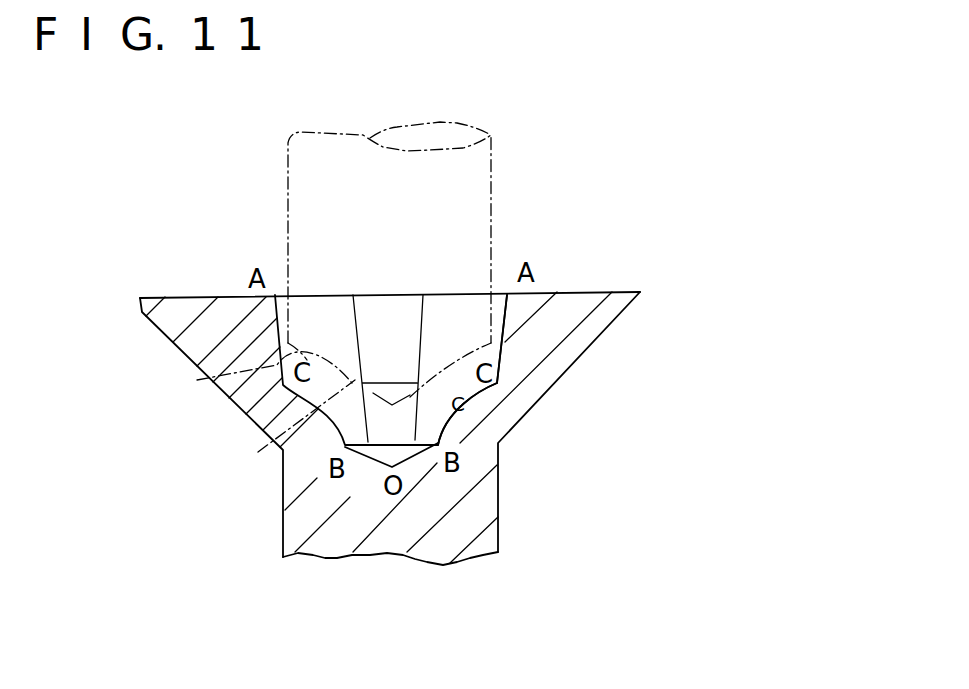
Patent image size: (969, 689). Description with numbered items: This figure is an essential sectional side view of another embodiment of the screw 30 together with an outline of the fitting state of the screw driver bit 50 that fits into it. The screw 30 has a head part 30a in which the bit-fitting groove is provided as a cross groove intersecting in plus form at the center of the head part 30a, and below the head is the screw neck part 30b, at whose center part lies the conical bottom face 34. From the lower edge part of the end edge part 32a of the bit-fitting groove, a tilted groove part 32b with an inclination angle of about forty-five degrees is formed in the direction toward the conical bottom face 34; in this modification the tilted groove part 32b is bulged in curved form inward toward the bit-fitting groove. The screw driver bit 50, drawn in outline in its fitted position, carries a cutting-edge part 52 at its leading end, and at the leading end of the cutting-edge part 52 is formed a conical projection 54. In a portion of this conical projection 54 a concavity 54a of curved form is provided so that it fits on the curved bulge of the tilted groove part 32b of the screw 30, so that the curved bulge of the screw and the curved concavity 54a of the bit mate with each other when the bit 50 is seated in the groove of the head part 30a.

The screw 30 is at (163, 297).
The head part 30a is at (588, 330).
The screw neck part 30b is at (480, 488).
The end edge part 32a is at (500, 292).
The tilted groove part 32b is at (602, 437).
The conical bottom face 34 is at (380, 455).
The screw driver bit 50 is at (498, 212).
The cutting-edge part 52 is at (287, 295).
The conical projection 54 is at (258, 452).
The concavity 54a is at (197, 380).